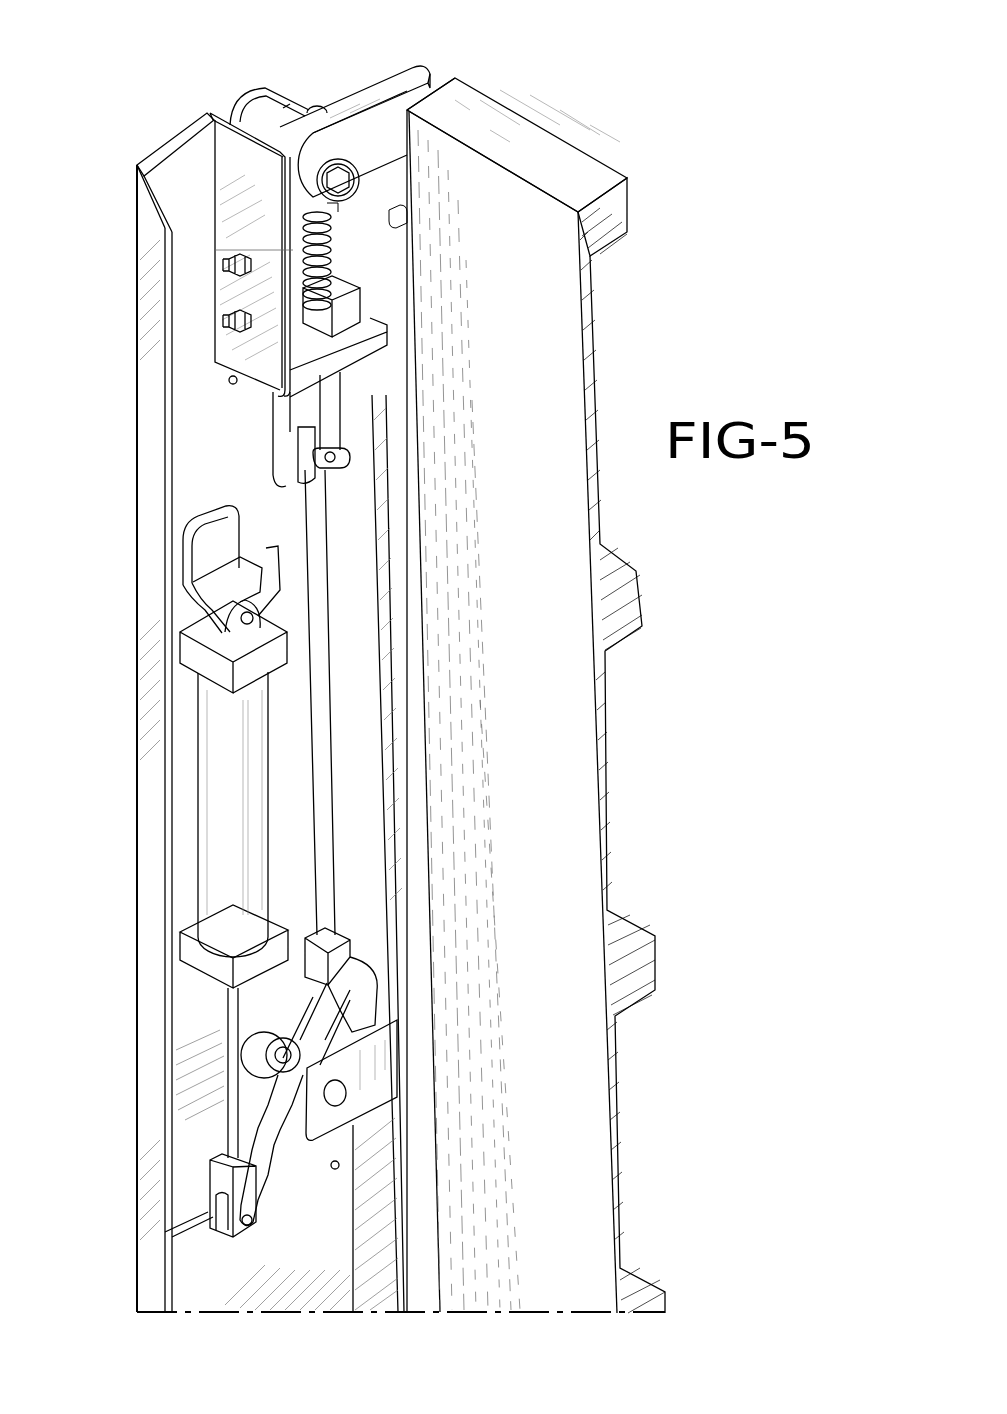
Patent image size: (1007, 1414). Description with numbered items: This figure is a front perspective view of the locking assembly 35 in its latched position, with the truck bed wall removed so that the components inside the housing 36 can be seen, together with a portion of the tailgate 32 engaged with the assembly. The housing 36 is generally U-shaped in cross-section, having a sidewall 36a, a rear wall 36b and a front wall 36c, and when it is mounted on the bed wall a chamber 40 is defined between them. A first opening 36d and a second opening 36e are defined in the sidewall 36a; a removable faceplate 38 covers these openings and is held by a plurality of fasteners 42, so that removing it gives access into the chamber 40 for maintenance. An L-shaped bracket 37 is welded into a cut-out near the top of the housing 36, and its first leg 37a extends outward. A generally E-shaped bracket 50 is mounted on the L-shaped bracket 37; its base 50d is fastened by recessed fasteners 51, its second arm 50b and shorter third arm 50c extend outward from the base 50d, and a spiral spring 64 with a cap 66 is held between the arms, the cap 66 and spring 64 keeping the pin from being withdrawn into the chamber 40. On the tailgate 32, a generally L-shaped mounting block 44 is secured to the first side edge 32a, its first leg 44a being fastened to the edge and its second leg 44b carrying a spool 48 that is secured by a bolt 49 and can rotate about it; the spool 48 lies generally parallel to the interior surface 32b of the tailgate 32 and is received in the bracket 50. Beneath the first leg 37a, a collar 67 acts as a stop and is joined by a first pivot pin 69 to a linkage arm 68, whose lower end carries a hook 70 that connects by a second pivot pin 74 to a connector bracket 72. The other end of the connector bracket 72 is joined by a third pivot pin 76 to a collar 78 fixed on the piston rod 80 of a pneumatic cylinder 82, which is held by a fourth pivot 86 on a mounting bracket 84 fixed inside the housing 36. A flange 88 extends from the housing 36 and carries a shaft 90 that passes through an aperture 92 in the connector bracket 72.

The tailgate 32 is at (599, 150).
The first side edge 32a is at (392, 78).
The interior surface 32b is at (553, 558).
The locking assembly 35 is at (372, 289).
The housing 36 is at (146, 153).
The sidewall 36a is at (180, 137).
The rear wall 36b is at (360, 842).
The front wall 36c is at (157, 516).
The first opening 36d is at (190, 1122).
The second opening 36e is at (275, 483).
The L-shaped bracket 37 is at (218, 178).
The first leg 37a is at (332, 367).
The removable faceplate 38 is at (192, 1190).
The chamber 40 is at (213, 404).
The fasteners 42 is at (228, 384).
The mounting block 44 is at (430, 63).
The first leg 44a is at (398, 187).
The second leg 44b is at (367, 140).
The spool 48 is at (249, 101).
The bolt 49 is at (337, 252).
The E-shaped bracket 50 is at (332, 333).
The second arm 50b is at (345, 190).
The third arm 50c is at (283, 108).
The base 50d is at (293, 250).
The fasteners 51 is at (226, 322).
The spiral spring 64 is at (335, 254).
The cap 66 is at (316, 105).
The collar 67 is at (337, 410).
The linkage arm 68 is at (327, 792).
The first pivot pin 69 is at (342, 457).
The hook 70 is at (372, 985).
The connector bracket 72 is at (272, 1180).
The second pivot pin 74 is at (355, 1035).
The third pivot pin 76 is at (250, 1224).
The collar 78 is at (210, 1173).
The piston rod 80 is at (228, 1025).
The pneumatic cylinder 82 is at (215, 718).
The mounting bracket 84 is at (205, 550).
The fourth pivot 86 is at (252, 623).
The flange 88 is at (357, 1086).
The shaft 90 is at (342, 1101).
The aperture 92 is at (262, 1060).